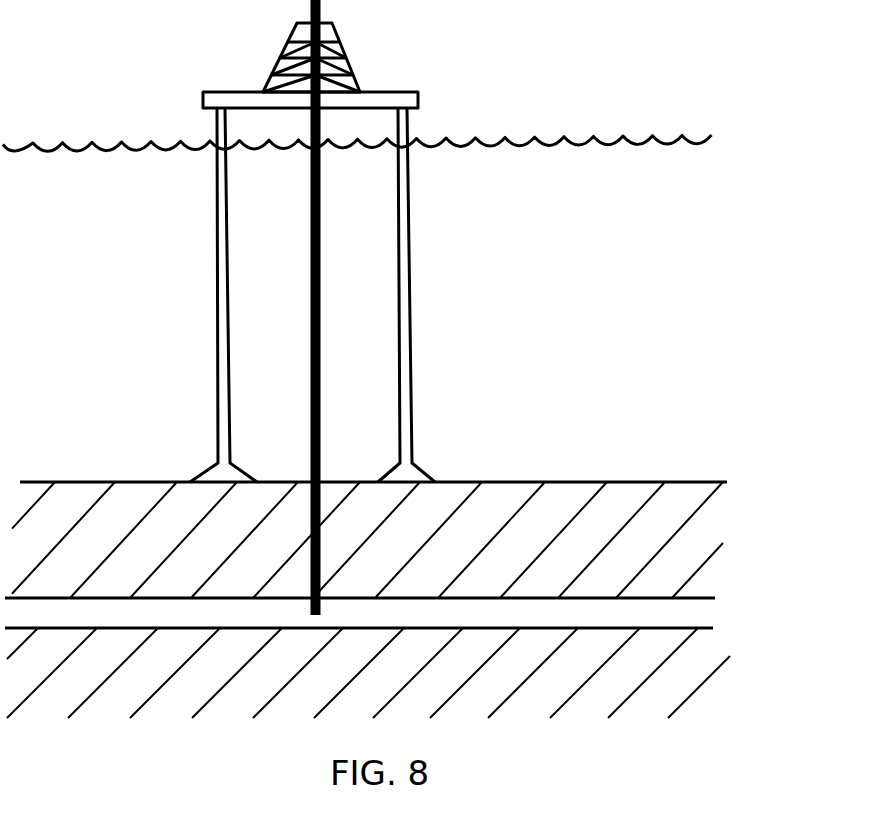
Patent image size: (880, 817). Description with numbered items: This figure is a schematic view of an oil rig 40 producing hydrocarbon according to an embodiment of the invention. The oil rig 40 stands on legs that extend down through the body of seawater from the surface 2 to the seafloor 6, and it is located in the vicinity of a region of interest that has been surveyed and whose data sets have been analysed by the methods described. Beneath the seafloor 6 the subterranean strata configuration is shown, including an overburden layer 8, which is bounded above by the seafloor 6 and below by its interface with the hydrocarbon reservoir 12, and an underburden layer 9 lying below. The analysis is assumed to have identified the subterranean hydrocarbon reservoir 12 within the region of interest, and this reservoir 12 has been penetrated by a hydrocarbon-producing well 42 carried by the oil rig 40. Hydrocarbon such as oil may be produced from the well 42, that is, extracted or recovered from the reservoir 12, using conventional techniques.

The surface 2 is at (19, 149).
The oil rig 40 is at (391, 91).
The hydrocarbon-producing well 42 is at (324, 470).
The seafloor 6 is at (511, 481).
The overburden layer 8 is at (706, 527).
The hydrocarbon reservoir 12 is at (706, 615).
The underburden layer 9 is at (707, 697).